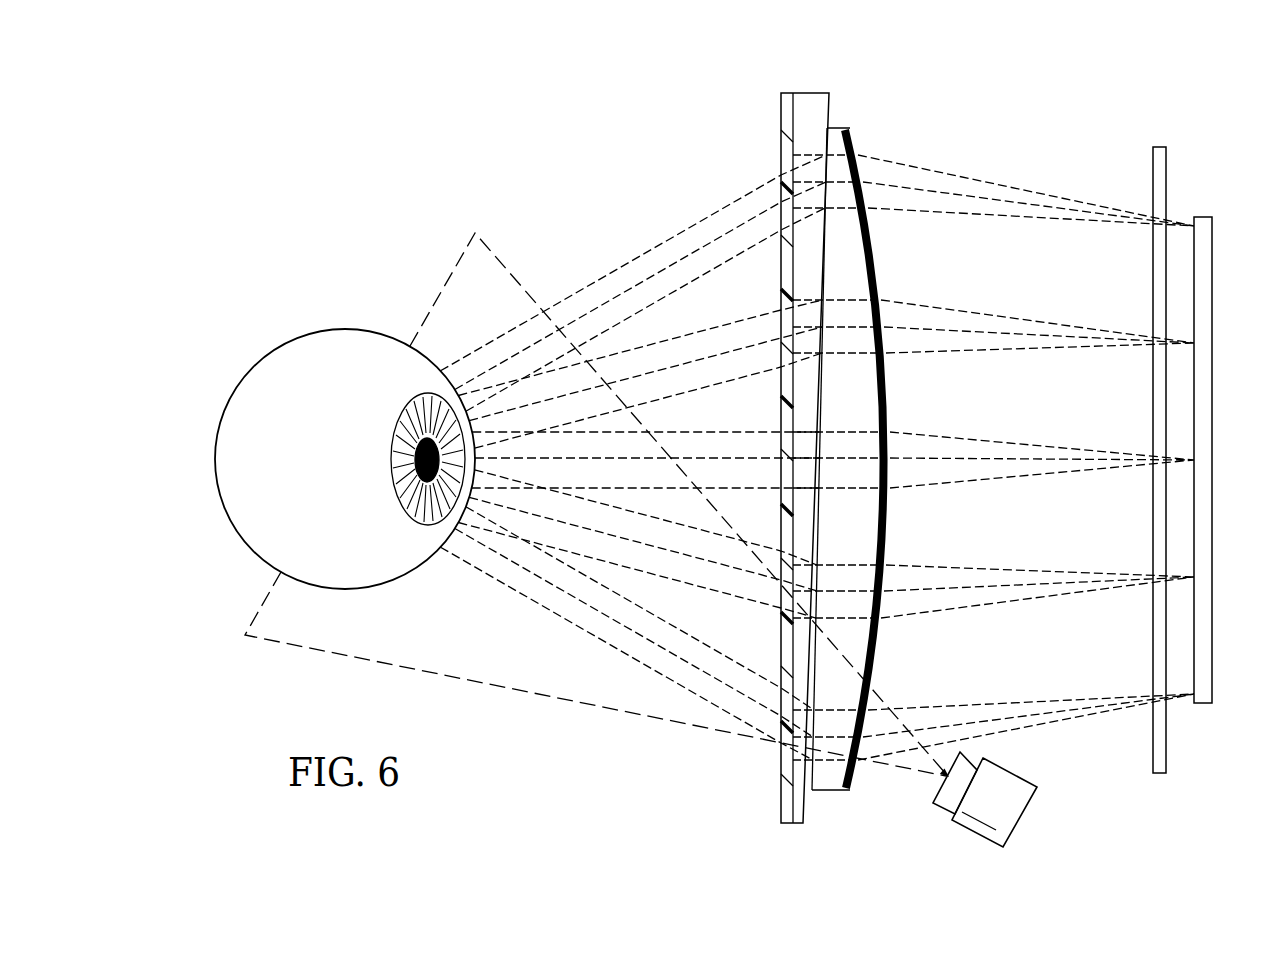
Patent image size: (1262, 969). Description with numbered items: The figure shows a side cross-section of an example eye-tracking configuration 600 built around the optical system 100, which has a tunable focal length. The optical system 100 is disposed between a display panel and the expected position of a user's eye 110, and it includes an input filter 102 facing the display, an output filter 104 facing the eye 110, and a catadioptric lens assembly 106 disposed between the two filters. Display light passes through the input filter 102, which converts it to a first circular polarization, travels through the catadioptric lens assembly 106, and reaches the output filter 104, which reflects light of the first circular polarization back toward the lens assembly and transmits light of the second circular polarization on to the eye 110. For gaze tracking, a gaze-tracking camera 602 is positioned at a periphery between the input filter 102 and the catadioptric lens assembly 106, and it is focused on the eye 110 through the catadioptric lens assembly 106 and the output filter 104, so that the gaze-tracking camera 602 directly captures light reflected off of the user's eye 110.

The configuration 600 is at (467, 101).
The optical system 100 is at (877, 100).
The input filter 102 is at (1178, 178).
The output filter 104 is at (775, 140).
The catadioptric lens assembly 106 is at (916, 401).
The eye 110 is at (345, 327).
The gaze-tracking camera 602 is at (977, 838).